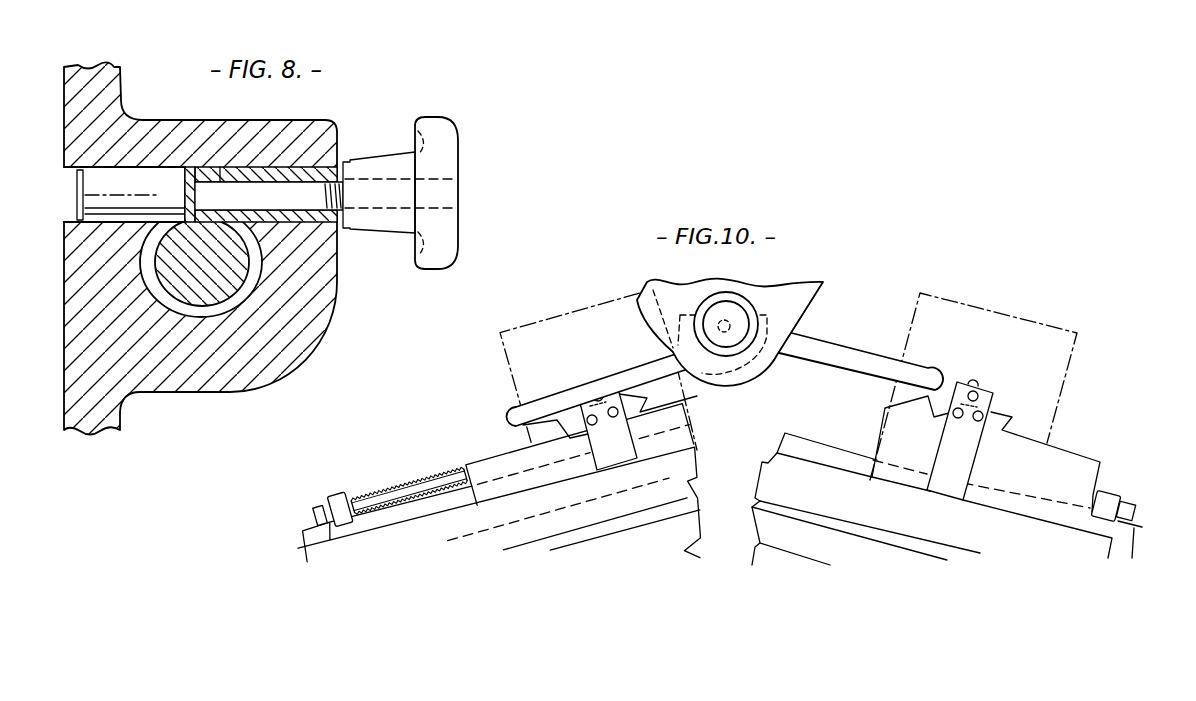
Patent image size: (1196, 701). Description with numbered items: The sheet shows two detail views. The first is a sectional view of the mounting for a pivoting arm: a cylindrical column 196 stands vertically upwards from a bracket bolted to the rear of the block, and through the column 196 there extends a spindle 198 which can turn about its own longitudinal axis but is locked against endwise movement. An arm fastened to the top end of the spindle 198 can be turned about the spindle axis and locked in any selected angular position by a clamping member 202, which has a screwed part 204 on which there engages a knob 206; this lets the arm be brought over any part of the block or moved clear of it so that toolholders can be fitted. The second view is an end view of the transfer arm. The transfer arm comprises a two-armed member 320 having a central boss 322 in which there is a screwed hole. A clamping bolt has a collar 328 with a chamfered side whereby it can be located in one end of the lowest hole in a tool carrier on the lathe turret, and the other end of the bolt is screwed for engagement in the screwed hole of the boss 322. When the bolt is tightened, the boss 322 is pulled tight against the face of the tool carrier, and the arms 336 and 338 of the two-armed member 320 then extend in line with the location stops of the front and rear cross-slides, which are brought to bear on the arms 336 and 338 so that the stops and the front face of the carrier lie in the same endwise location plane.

In FIG. 8, the cylindrical column 196 is at (168, 383).
In FIG. 8, the spindle 198 is at (237, 278).
In FIG. 8, the clamping member 202 is at (150, 178).
In FIG. 8, the screwed part 204 is at (389, 180).
In FIG. 8, the knob 206 is at (430, 266).
In FIG. 10, the two-armed member 320 is at (783, 355).
In FIG. 10, the central boss 322 is at (730, 381).
In FIG. 10, the collar 328 is at (757, 290).
In FIG. 10, the arm 336 is at (633, 374).
In FIG. 10, the arm 338 is at (848, 369).